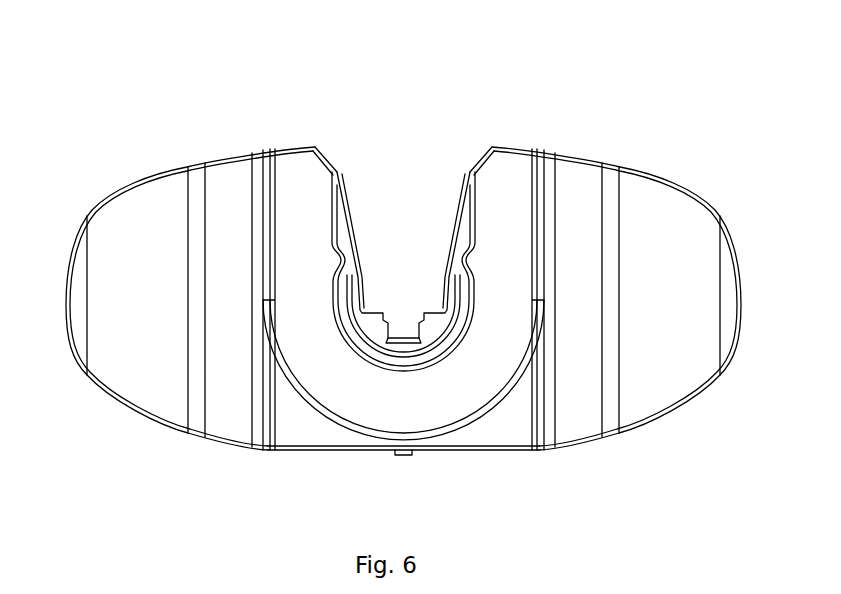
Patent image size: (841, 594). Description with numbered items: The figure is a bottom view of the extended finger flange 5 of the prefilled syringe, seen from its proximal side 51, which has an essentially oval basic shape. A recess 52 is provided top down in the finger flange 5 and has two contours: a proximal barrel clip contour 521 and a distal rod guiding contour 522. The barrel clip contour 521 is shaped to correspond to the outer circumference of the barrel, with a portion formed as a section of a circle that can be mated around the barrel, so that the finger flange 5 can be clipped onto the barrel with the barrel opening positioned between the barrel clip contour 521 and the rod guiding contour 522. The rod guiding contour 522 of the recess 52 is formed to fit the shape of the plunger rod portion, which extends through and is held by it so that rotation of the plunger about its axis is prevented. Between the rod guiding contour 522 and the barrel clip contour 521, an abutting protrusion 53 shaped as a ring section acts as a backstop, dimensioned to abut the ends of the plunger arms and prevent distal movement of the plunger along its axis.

The extended finger flange 5 is at (613, 158).
The proximal side 51 is at (131, 208).
The recess 52 is at (407, 187).
The proximal barrel clip contour 521 is at (443, 358).
The distal rod guiding contour 522 is at (385, 325).
The abutting protrusion 53 is at (357, 323).